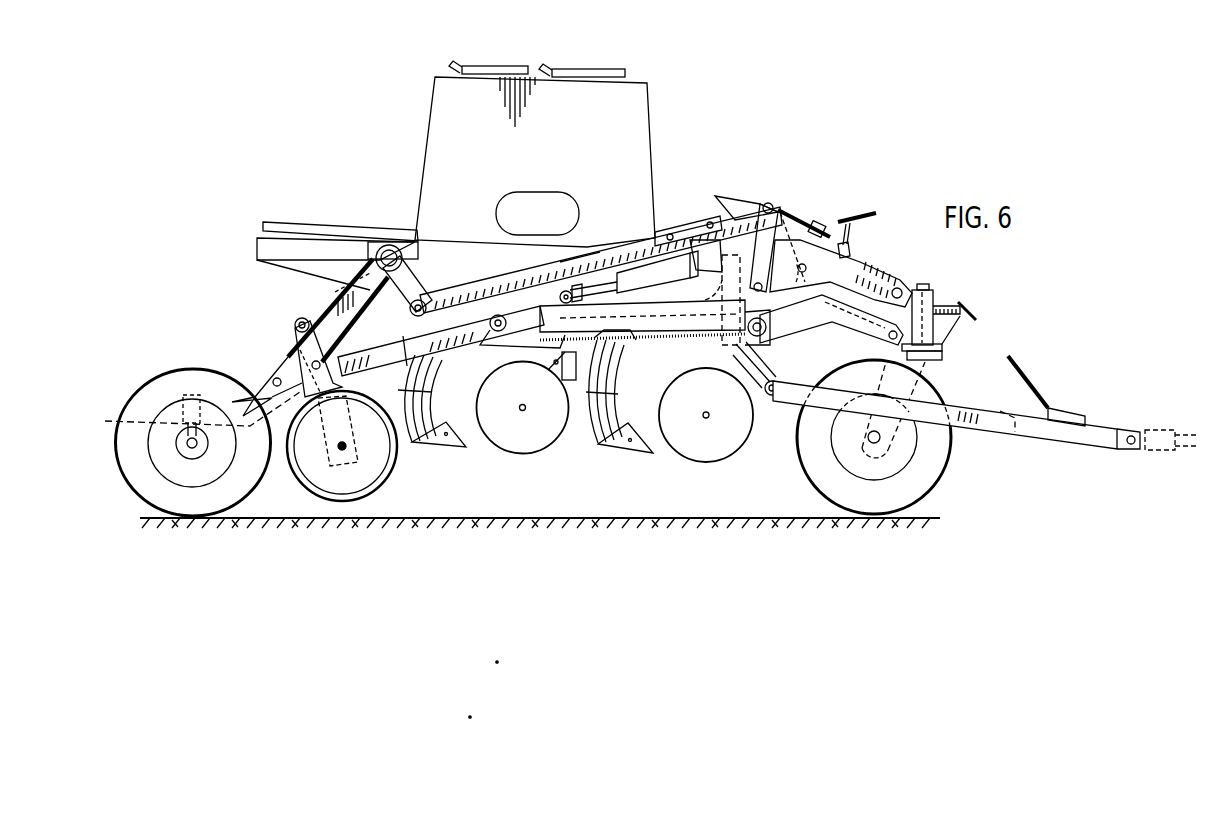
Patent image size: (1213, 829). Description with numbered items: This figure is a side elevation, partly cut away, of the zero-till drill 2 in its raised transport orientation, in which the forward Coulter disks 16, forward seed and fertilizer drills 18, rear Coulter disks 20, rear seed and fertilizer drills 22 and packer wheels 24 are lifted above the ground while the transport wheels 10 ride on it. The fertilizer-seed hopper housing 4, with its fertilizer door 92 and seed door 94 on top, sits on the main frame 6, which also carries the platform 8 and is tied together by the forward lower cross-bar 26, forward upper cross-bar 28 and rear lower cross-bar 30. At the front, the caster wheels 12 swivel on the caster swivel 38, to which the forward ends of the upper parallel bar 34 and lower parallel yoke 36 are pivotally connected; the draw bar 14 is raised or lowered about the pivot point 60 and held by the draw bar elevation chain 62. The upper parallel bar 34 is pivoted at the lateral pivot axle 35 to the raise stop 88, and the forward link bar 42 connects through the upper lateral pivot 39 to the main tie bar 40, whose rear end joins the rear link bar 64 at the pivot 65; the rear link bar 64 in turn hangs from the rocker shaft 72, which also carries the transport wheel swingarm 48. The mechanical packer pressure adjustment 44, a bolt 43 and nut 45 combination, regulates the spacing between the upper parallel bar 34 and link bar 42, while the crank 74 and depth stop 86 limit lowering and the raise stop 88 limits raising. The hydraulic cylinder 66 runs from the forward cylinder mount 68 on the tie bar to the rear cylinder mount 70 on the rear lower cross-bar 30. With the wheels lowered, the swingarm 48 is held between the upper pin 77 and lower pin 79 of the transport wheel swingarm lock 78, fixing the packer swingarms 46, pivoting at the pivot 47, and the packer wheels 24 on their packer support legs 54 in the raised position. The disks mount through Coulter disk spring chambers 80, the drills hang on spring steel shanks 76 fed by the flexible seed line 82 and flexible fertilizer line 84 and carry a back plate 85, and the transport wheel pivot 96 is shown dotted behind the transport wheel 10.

The zero-till drill 2 is at (760, 120).
The fertilizer-seed hopper housing 4 is at (428, 140).
The main frame 6 is at (276, 254).
The platform 8 is at (308, 222).
The transport wheels 10 is at (182, 368).
The caster wheels 12 is at (952, 461).
The draw bar 14 is at (1016, 420).
The forward Coulter disks 16 is at (727, 447).
The forward seed and fertilizer drills 18 is at (648, 442).
The rear Coulter disks 20 is at (516, 454).
The rear seed and fertilizer drills 22 is at (463, 442).
The packer wheels 24 is at (301, 482).
The forward lower cross-bar 26 is at (745, 327).
The forward upper cross-bar 28 is at (710, 300).
The rear lower cross-bar 30 is at (642, 320).
The upper parallel bar 34 is at (877, 266).
The lateral pivot axle 35 is at (759, 275).
The lower parallel yoke 36 is at (852, 327).
The caster swivel 38 is at (966, 323).
The upper lateral pivot 39 is at (760, 206).
The main tie bar 40 is at (612, 252).
The forward link bar 42 is at (742, 216).
The bolt 43 is at (777, 205).
The mechanical packer pressure adjustment 44 is at (813, 214).
The nut 45 is at (828, 222).
The packer swingarms 46 is at (404, 345).
The pivot 47 is at (492, 334).
The transport wheel swingarm 48 is at (326, 318).
The packer support legs 54 is at (348, 428).
The pivot point 60 is at (771, 396).
The draw bar elevation chain 62 is at (1022, 368).
The rear link bar 64 is at (414, 282).
The pivot 65 is at (422, 303).
The hydraulic cylinder 66 is at (632, 250).
The forward cylinder mount 68 is at (698, 226).
The rear cylinder mount 70 is at (565, 291).
The rocker shaft 72 is at (384, 244).
The crank 74 is at (851, 217).
The spring steel shanks 76 is at (440, 396).
The upper pin 77 is at (295, 322).
The transport wheel swingarm lock 78 is at (294, 360).
The lower pin 79 is at (323, 362).
The Coulter disk spring chamber 80 is at (565, 376).
The flexible seed line 82 is at (592, 412).
The flexible fertilizer line 84 is at (620, 385).
The back plate 85 is at (414, 446).
The depth stop 86 is at (898, 288).
The raise stop 88 is at (807, 269).
The fertilizer door 92 is at (590, 69).
The seed door 94 is at (500, 66).
The transport wheel pivot 96 is at (191, 414).